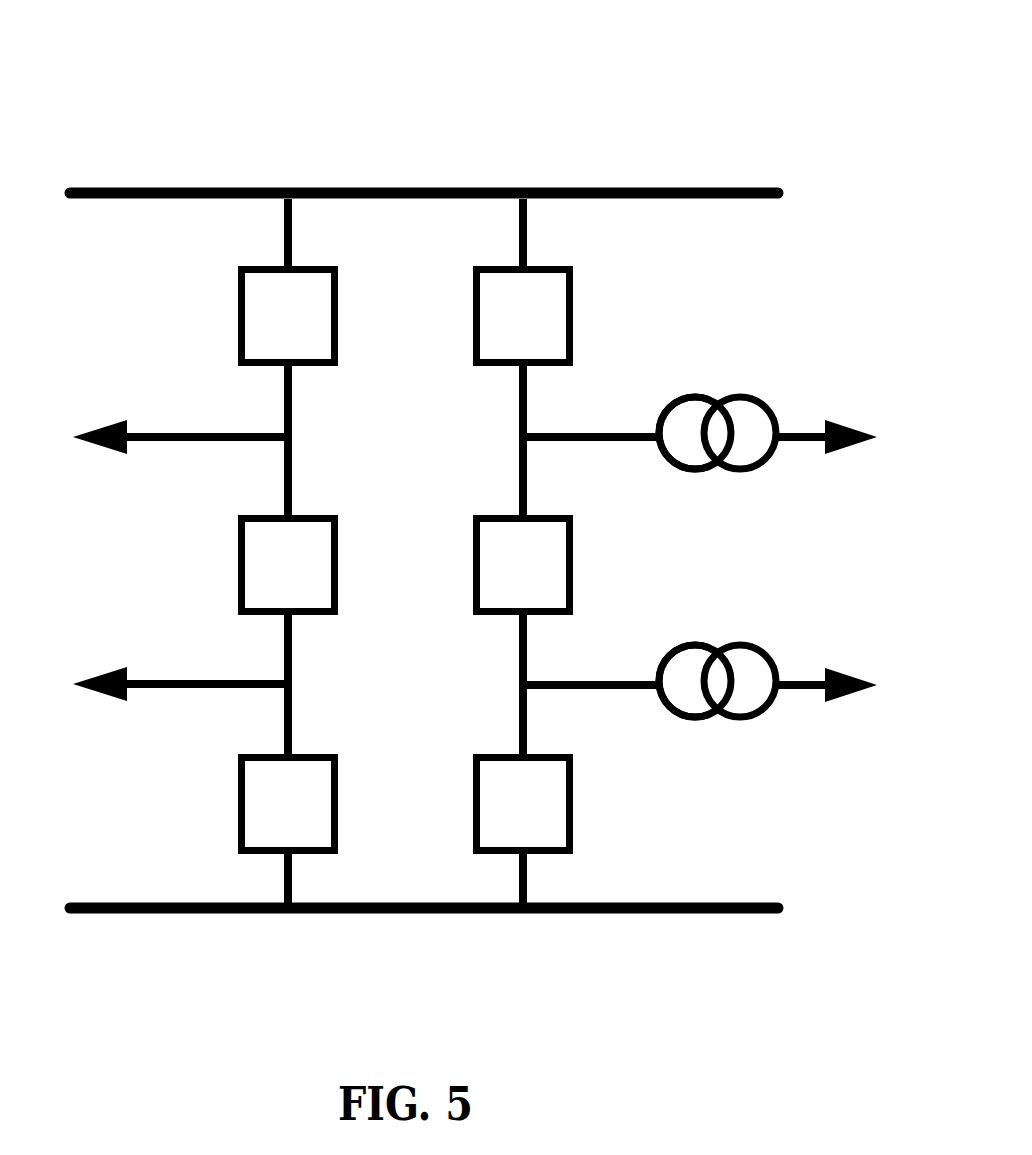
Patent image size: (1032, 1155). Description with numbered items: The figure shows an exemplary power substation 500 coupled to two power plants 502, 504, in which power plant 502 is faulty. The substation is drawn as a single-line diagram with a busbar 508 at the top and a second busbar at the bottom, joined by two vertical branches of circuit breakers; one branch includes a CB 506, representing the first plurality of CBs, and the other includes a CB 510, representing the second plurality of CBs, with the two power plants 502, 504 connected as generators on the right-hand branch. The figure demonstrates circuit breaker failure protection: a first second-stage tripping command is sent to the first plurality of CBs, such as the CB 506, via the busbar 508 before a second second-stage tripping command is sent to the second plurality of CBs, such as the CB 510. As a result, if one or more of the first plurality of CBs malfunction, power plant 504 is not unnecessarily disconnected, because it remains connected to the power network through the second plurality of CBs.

The power substation 500 is at (724, 150).
The power plant 502 is at (698, 472).
The power plant 504 is at (698, 722).
The CB 506 is at (242, 292).
The busbar 508 is at (528, 187).
The CB 510 is at (497, 753).